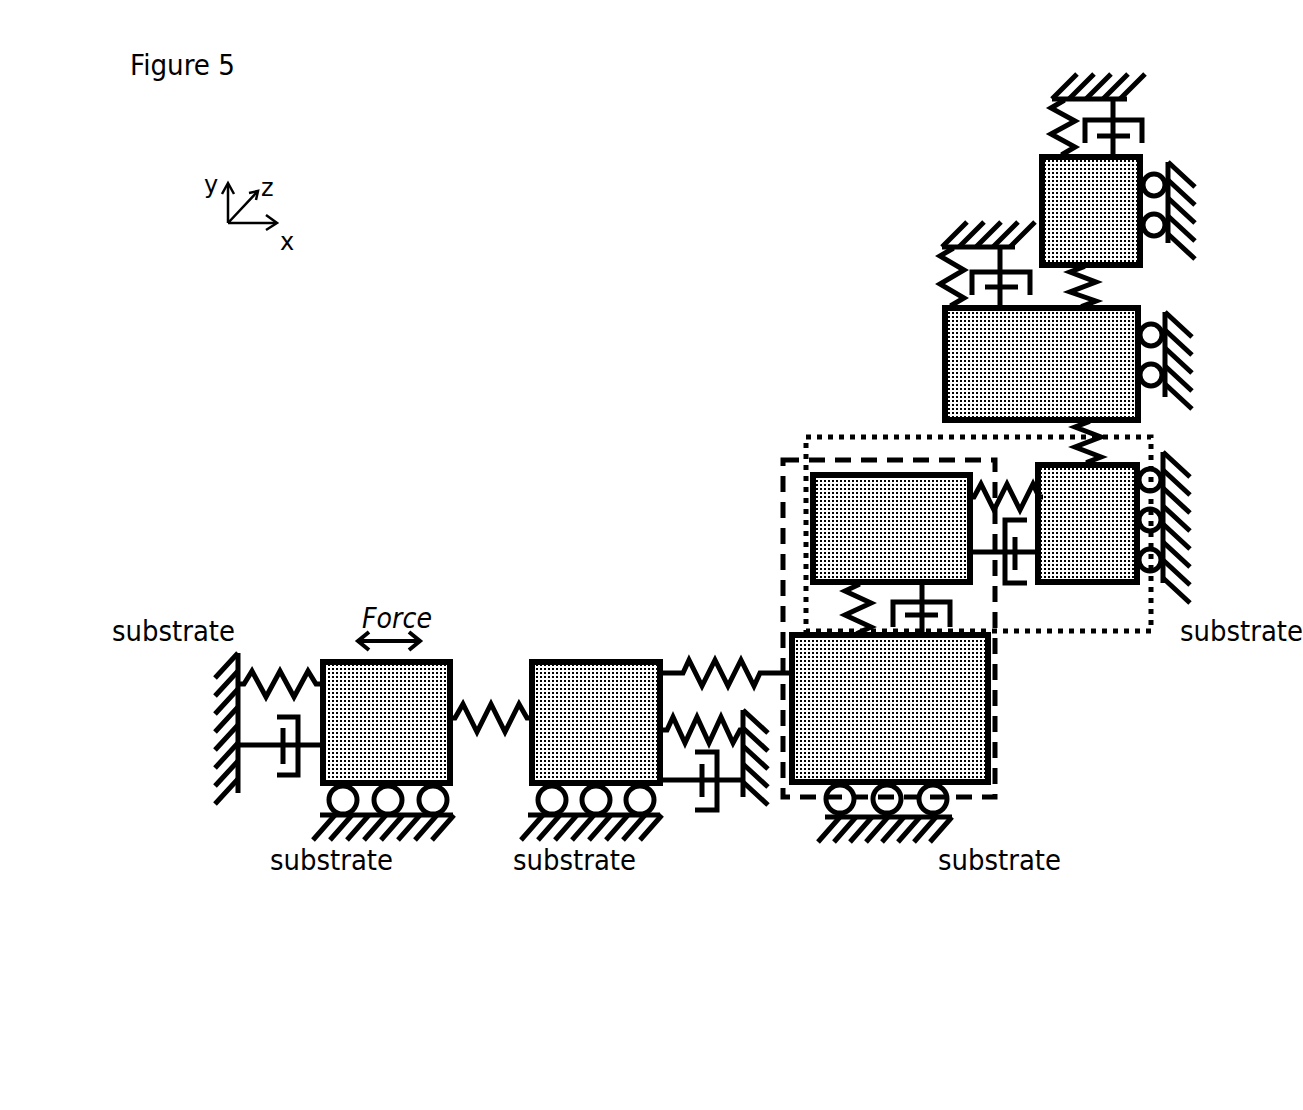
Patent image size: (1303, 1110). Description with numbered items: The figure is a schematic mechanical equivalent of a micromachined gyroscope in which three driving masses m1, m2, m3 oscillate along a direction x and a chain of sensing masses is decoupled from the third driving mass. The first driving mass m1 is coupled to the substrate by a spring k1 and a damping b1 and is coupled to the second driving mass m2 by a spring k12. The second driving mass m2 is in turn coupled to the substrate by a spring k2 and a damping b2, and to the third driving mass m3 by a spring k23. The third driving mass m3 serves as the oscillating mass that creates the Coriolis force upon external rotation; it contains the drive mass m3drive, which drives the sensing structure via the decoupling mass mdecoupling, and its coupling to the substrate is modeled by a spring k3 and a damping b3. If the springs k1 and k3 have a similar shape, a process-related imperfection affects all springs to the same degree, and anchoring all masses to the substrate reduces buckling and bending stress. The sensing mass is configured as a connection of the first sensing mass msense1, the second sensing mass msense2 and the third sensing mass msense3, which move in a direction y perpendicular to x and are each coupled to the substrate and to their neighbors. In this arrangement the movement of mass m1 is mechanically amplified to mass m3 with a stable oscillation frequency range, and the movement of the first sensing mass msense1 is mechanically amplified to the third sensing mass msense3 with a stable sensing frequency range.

The first driving mass m1 is at (386, 738).
The second driving mass m2 is at (596, 738).
The third driving mass m3 is at (912, 635).
The drive mass m3drive is at (890, 724).
The decoupling mass mdecoupling is at (891, 555).
The first sensing mass msense1 is at (1099, 522).
The second sensing mass msense2 is at (1051, 333).
The third sensing mass msense3 is at (1103, 182).
The spring k1 is at (280, 674).
The spring k12 is at (491, 706).
The spring k2 is at (701, 717).
The spring k23 is at (726, 653).
The spring k3 is at (1006, 480).
The damping b1 is at (280, 776).
The damping b2 is at (701, 806).
The damping b3 is at (1006, 577).